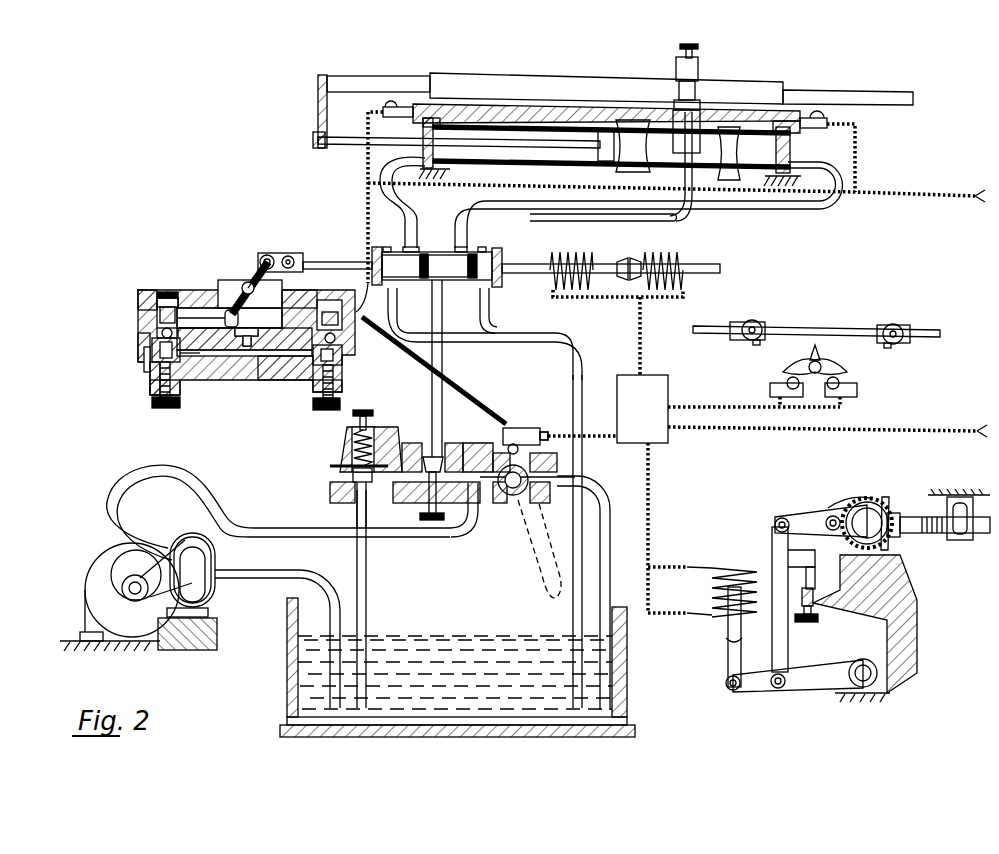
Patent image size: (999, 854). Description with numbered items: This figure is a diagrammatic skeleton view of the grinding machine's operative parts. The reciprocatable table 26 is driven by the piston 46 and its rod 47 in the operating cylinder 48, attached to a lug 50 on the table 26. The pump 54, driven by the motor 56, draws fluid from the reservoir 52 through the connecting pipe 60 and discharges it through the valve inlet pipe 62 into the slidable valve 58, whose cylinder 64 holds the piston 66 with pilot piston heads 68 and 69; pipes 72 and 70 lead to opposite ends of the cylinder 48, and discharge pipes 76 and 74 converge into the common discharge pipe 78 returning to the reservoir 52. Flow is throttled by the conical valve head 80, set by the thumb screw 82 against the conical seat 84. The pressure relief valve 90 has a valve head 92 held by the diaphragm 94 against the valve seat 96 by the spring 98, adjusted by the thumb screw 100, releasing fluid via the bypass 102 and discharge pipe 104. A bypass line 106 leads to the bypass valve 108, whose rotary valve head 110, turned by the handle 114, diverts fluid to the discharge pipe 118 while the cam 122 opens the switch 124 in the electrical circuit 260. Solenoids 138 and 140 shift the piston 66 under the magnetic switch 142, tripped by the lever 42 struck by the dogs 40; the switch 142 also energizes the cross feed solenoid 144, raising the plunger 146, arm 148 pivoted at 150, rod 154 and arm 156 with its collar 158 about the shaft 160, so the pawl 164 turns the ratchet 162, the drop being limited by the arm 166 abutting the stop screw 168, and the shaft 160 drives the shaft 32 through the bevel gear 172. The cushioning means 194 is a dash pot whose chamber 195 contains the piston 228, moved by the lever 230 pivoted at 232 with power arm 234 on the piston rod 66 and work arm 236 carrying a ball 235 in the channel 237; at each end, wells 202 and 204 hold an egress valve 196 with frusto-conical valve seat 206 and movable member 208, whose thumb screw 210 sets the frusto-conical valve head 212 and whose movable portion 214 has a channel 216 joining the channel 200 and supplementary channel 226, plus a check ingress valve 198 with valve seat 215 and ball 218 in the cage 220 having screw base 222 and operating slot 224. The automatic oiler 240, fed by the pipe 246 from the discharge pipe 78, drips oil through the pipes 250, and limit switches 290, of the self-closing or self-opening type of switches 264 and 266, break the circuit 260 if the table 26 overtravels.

The grinding wheel table 26 is at (525, 73).
The shaft 32 is at (912, 533).
The dogs 40 is at (753, 346).
The tripping lever 42 is at (850, 366).
The piston 46 is at (620, 128).
The piston rod 47 is at (487, 139).
The cylinder 48 is at (570, 123).
The lug 50 is at (318, 93).
The reservoir 52 is at (287, 676).
The pump 54 is at (212, 583).
The motor 56 is at (86, 565).
The slidable valve 58 is at (495, 243).
The connecting pipe 60 is at (280, 579).
The valve inlet pipe 62 is at (446, 356).
The valve cylinder 64 is at (379, 247).
The valve piston 66 is at (450, 280).
The pilot piston head 68 is at (437, 252).
The pilot piston head 69 is at (497, 248).
The pipe 70 is at (412, 210).
The pipe 72 is at (814, 165).
The discharge pipe 74 is at (400, 322).
The discharge pipe 76 is at (489, 312).
The common discharge pipe 78 is at (587, 370).
The conical valve head 80 is at (440, 455).
The thumb screw 82 is at (440, 540).
The conical seat 84 is at (468, 448).
The pressure relief valve 90 is at (340, 452).
The valve head 92 is at (353, 476).
The diaphragm 94 is at (335, 466).
The valve seat 96 is at (369, 494).
The spring 98 is at (378, 440).
The adjusting thumb screw 100 is at (367, 412).
The bypass 102 is at (428, 497).
The discharge pipe 104 is at (366, 592).
The bypass line 106 is at (508, 449).
The bypass valve 108 is at (503, 503).
The rotary valve head 110 is at (528, 492).
The handle 114 is at (542, 586).
The discharge pipe 118 is at (607, 500).
The cam 122 is at (546, 441).
The switch 124 is at (522, 428).
The solenoid 138 is at (685, 262).
The solenoid 140 is at (590, 262).
The magnetic switch 142 is at (655, 375).
The cross feed solenoid 144 is at (752, 568).
The plunger 146 is at (726, 630).
The arm 148 is at (760, 692).
The pivot 150 is at (865, 660).
The rod 154 is at (790, 640).
The arm 156 is at (800, 514).
The collar 158 is at (890, 500).
The shaft 160 is at (862, 508).
The ratchet 162 is at (877, 497).
The pawl 164 is at (836, 508).
The arm 166 is at (808, 568).
The adjustable stop screw 168 is at (813, 600).
The bevel gear 172 is at (940, 497).
The cushioning means 194 is at (190, 210).
The chamber 195 is at (330, 262).
The adjustable egress valve 196 is at (150, 388).
The check ingress valve 198 is at (137, 310).
The channel 200 is at (232, 362).
The well 202 is at (144, 360).
The well 204 is at (362, 296).
The frusto-conical valve seat 206 is at (162, 336).
The movable member 208 is at (150, 378).
The thumb screw 210 is at (165, 410).
The frusto-conical valve head 212 is at (152, 350).
The movable portion 214 is at (176, 366).
The check valve seat 215 is at (159, 330).
The channel 216 is at (186, 356).
The ball 218 is at (157, 312).
The cage 220 is at (140, 300).
The screw base 222 is at (157, 300).
The operating slot 224 is at (163, 292).
The supplementary channel 226 is at (264, 382).
The piston 228 is at (298, 290).
The lever 230 is at (249, 282).
The pivot 232 is at (246, 262).
The power arm 234 is at (278, 253).
The ball 235 is at (218, 312).
The work arm 236 is at (228, 300).
The channel 237 is at (226, 312).
The automatic oiler 240 is at (700, 74).
The pipe 246 is at (690, 220).
The pipes 250 is at (682, 160).
The electrical circuit 260 is at (490, 400).
The switch 264 is at (848, 399).
The switch 266 is at (770, 388).
The limit switches 290 is at (385, 104).